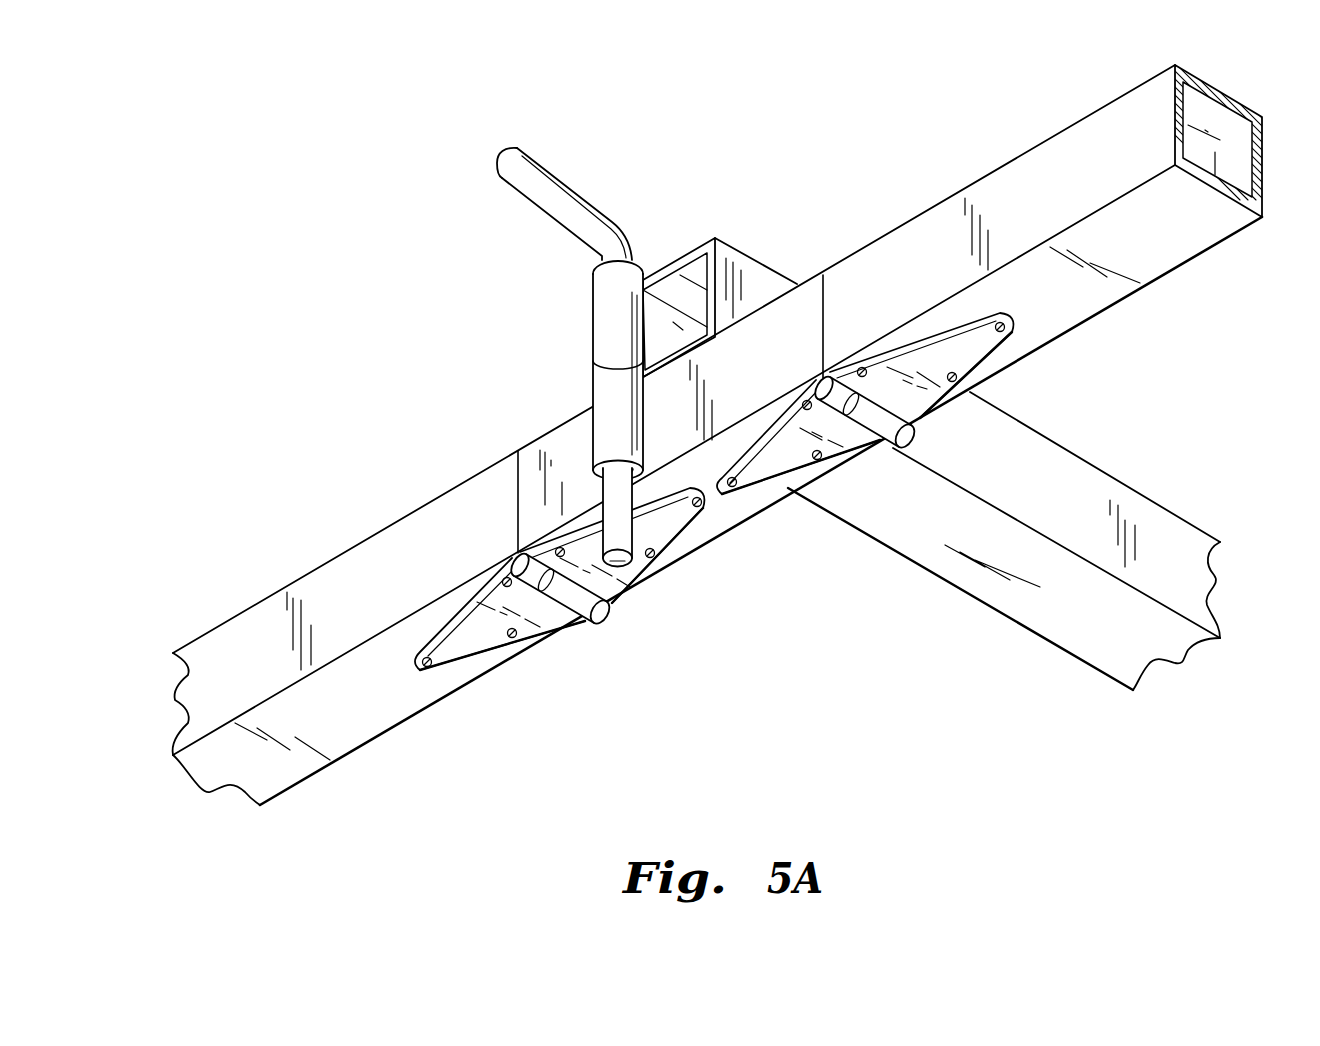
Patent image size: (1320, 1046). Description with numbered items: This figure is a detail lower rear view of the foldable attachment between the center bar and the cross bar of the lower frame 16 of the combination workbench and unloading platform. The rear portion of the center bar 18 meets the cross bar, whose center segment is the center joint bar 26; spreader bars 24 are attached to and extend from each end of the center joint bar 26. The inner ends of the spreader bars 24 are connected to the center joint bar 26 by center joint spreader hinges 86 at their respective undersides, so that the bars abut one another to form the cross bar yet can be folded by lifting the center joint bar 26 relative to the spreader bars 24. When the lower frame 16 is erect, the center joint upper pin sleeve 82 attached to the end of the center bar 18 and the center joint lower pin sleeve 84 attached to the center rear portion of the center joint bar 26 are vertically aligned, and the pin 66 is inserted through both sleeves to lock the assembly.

The lower frame 16 is at (526, 358).
The center bar 18 is at (768, 287).
The spreader bars 24 is at (351, 551).
The center joint bar 26 is at (692, 433).
The pin 66 is at (547, 170).
The center joint upper pin sleeve 82 is at (630, 280).
The center joint lower pin sleeve 84 is at (638, 442).
The center joint spreader hinges 86 is at (594, 614).